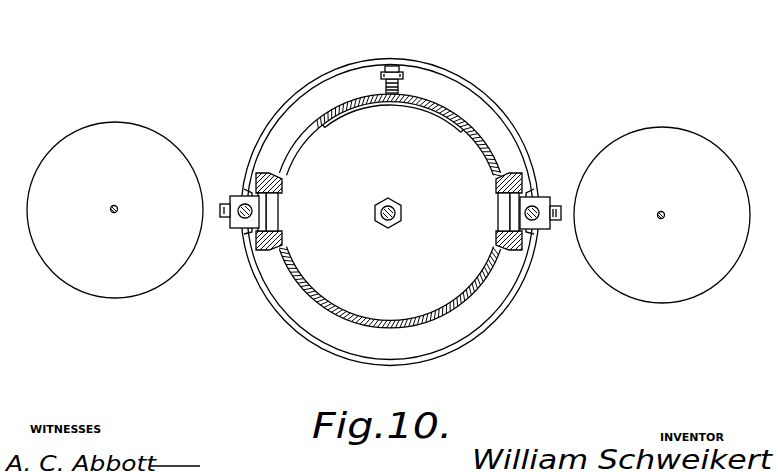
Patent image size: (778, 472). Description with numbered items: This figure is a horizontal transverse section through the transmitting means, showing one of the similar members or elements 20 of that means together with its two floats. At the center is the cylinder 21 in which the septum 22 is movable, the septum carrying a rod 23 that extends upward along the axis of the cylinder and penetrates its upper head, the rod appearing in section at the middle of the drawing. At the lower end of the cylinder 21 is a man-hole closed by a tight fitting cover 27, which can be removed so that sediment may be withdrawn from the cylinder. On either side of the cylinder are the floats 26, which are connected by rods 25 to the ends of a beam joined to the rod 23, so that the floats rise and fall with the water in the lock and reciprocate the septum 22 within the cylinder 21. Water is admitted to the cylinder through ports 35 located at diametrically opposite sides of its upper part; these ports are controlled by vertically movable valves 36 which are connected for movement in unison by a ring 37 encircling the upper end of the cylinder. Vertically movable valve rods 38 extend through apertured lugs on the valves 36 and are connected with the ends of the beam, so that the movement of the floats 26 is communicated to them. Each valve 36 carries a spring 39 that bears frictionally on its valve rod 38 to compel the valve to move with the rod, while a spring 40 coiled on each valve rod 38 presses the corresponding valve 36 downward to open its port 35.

The transmitting member 20 is at (383, 201).
The cylinder 21 is at (393, 131).
The septum 22 is at (425, 288).
The rod 23 is at (384, 224).
The rod 25 is at (115, 205).
The float 26 is at (388, 212).
The cover 27 is at (432, 101).
The port 35 is at (279, 217).
The valve 36 is at (279, 198).
The ring 37 is at (285, 333).
The valve rod 38 is at (243, 228).
The spring 39 is at (236, 197).
The spring 40 is at (232, 226).